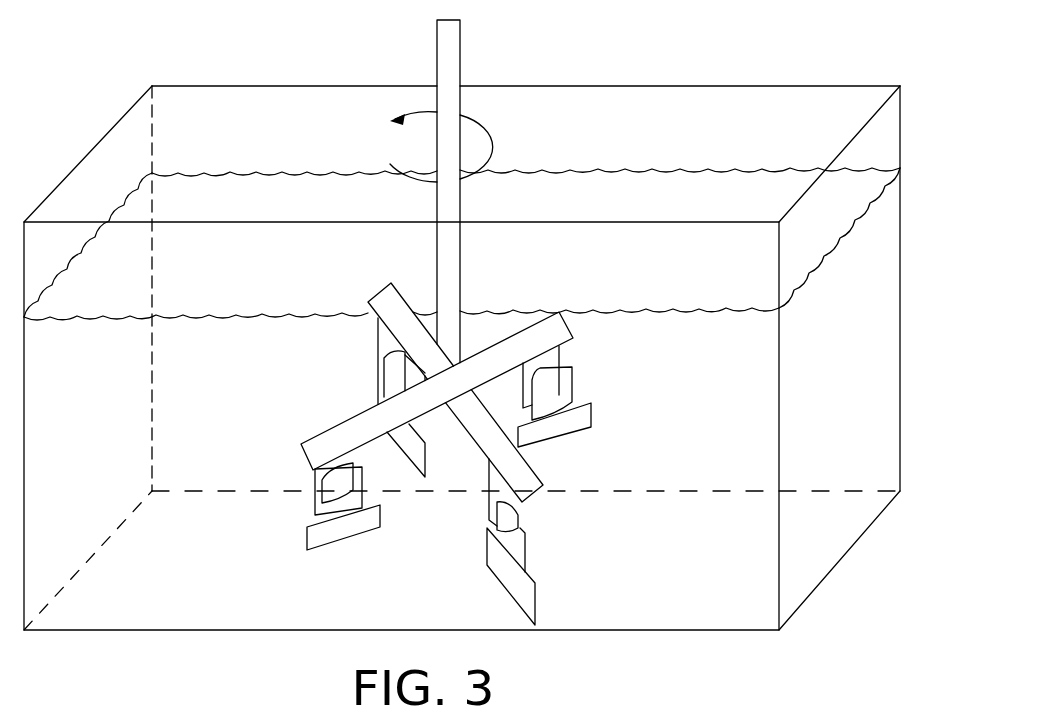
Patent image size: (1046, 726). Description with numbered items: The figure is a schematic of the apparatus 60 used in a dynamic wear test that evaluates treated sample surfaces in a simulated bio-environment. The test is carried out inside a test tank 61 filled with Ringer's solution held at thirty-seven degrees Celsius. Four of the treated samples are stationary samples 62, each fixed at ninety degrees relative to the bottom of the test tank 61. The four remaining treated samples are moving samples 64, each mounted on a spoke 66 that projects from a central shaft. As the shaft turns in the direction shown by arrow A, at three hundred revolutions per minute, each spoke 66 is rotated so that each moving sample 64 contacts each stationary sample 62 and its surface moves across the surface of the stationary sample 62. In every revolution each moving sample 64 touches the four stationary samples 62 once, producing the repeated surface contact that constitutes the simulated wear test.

The apparatus 60 is at (791, 66).
The test tank 61 is at (900, 133).
The stationary sample 62 is at (382, 373).
The moving sample 64 is at (377, 338).
The spoke 66 is at (460, 42).
The arrow A is at (480, 123).